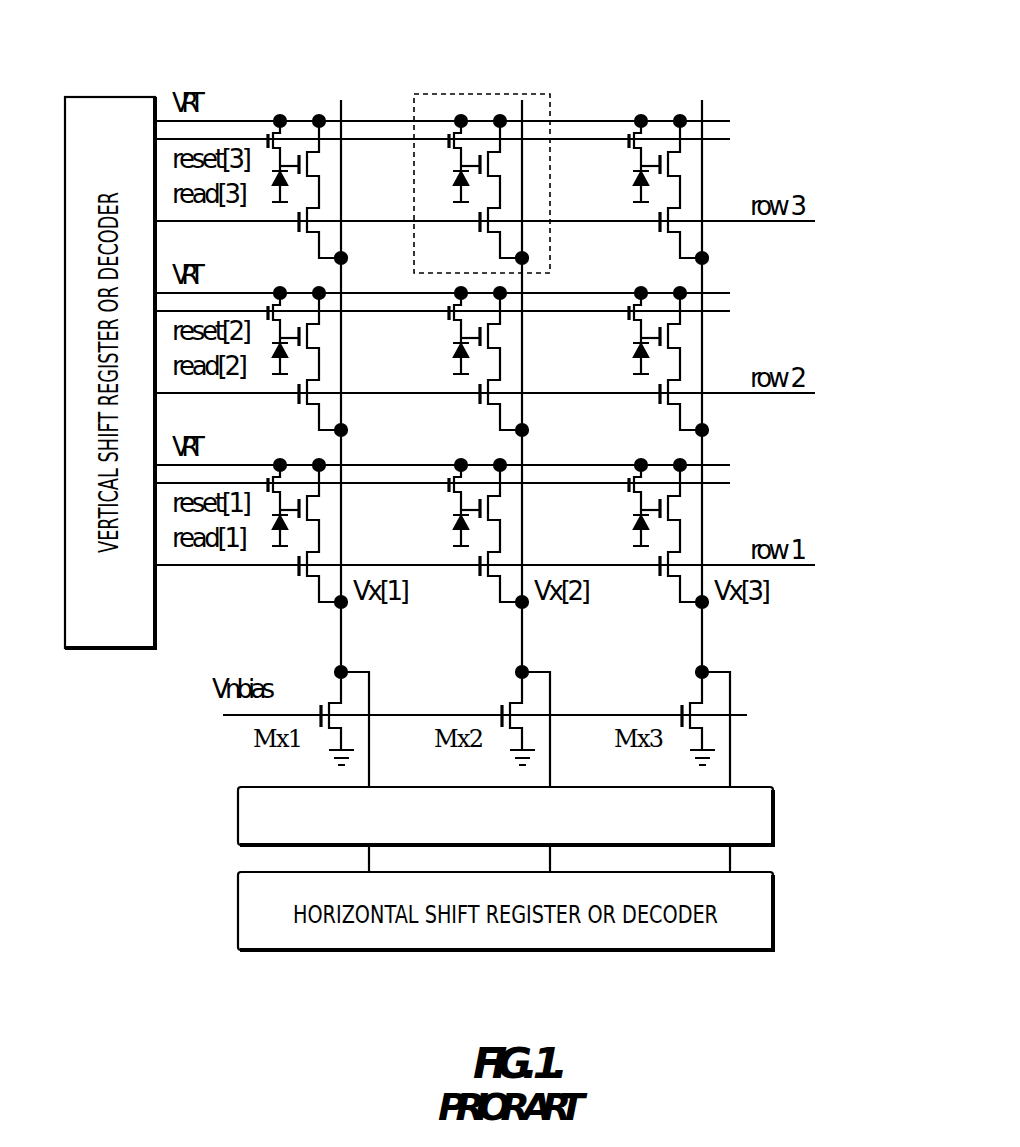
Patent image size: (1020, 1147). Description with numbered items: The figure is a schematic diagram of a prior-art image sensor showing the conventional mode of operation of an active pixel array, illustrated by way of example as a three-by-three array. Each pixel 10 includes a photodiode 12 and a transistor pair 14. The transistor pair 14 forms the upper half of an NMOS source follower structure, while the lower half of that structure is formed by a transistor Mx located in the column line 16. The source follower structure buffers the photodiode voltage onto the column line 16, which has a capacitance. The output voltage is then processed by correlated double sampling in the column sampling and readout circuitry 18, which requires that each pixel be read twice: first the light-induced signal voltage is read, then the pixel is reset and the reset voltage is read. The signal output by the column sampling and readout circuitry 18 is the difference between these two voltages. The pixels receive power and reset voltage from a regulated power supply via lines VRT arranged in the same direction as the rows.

The pixel 10 is at (472, 94).
The photodiode 12 is at (624, 183).
The transistor pair 14 is at (678, 212).
The column line 16 is at (702, 640).
The column sampling and readout circuitry 18 is at (775, 806).